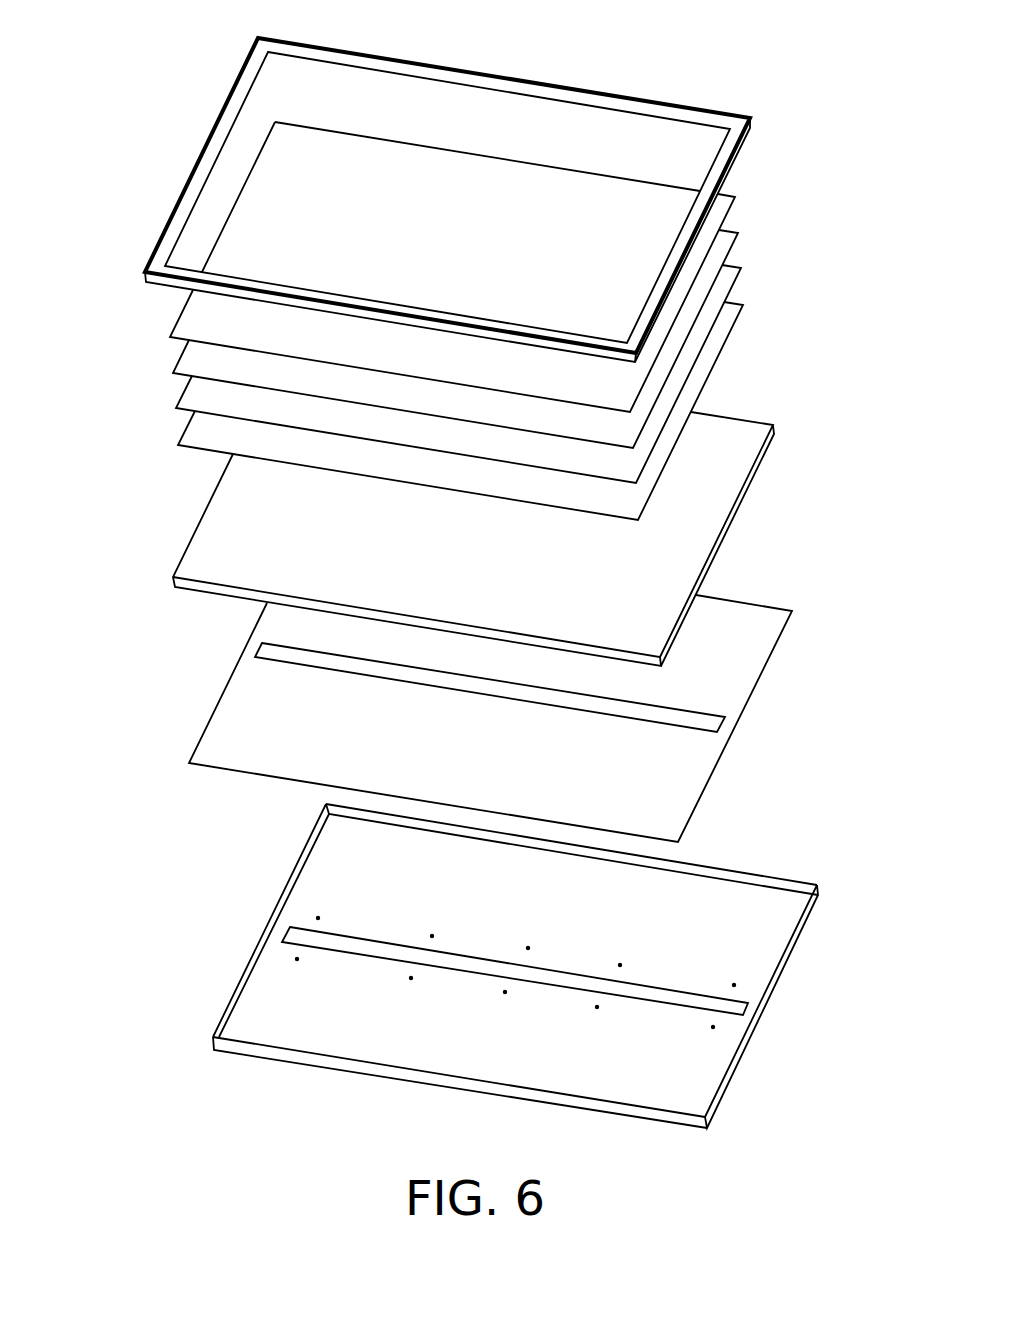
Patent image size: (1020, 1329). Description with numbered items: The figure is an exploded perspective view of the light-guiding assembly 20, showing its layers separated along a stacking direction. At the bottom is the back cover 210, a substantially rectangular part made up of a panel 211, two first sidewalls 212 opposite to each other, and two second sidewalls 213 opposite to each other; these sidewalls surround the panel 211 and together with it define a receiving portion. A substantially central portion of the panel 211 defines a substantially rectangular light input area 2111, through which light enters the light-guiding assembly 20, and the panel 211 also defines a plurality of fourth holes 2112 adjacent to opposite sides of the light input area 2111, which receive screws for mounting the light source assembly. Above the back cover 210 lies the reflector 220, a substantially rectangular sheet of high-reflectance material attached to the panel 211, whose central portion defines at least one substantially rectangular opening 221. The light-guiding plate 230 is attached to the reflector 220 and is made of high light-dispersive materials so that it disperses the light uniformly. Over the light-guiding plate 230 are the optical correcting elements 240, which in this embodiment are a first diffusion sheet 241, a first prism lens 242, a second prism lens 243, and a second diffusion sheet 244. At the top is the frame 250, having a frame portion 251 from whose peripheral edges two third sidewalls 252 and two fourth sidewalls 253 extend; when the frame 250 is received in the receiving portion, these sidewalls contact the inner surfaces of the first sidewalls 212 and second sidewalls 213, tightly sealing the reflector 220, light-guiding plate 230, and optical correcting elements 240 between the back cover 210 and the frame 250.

The light-guiding assembly 20 is at (566, 51).
The frame 250 is at (838, 160).
The frame portion 251 is at (722, 160).
The third sidewalls 252 is at (707, 203).
The fourth sidewalls 253 is at (620, 353).
The optical correcting elements 240 is at (107, 303).
The second diffusion sheet 244 is at (198, 323).
The second prism lens 243 is at (205, 366).
The first prism lens 242 is at (205, 396).
The first diffusion sheet 241 is at (202, 433).
The light-guiding plate 230 is at (747, 493).
The reflector 220 is at (682, 765).
The opening 221 is at (712, 723).
The back cover 210 is at (835, 1043).
The panel 211 is at (677, 1020).
The first sidewalls 212 is at (724, 1078).
The second sidewalls 213 is at (668, 1117).
The light input area 2111 is at (298, 938).
The fourth holes 2112 is at (318, 915).